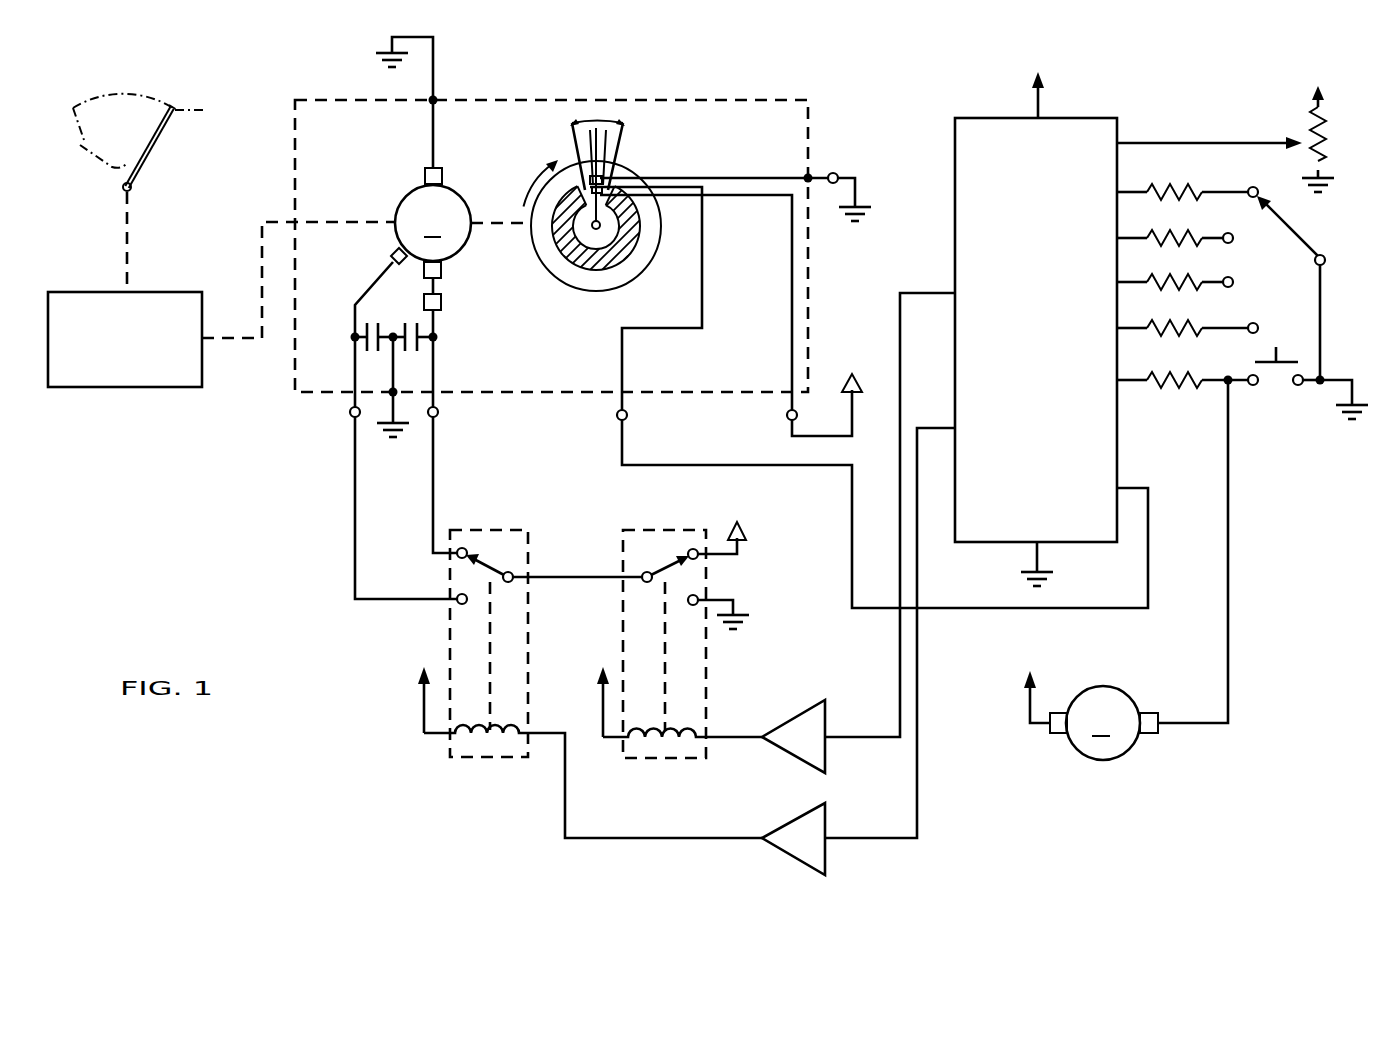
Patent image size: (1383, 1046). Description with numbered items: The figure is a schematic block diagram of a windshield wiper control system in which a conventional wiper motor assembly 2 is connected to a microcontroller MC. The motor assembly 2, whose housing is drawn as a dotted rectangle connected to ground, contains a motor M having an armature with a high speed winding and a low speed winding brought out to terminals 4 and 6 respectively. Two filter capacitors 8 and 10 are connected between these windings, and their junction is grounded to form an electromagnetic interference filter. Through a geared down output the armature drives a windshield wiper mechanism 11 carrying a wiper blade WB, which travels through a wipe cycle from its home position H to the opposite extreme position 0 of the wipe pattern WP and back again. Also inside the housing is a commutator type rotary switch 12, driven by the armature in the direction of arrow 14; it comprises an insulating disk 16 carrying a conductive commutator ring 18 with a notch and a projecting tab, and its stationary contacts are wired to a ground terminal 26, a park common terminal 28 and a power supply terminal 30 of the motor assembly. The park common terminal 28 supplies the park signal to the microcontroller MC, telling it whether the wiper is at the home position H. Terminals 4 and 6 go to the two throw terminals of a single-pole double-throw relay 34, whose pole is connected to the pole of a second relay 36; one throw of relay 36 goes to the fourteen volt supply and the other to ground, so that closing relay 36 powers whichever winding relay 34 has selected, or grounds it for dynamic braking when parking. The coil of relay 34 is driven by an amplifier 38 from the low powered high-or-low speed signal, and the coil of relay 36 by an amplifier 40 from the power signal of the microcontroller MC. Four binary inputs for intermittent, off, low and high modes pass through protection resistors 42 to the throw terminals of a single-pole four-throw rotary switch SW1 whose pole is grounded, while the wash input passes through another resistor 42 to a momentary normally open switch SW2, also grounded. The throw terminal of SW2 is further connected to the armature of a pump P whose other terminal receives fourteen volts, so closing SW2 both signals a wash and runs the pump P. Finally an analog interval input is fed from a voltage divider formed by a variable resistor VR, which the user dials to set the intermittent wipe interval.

The opposite extreme position 0 is at (82, 144).
The wipe pattern WP is at (123, 131).
The wiper blade WB is at (134, 170).
The home position H is at (198, 113).
The windshield wiper mechanism 11 is at (156, 288).
The wiper motor assembly 2 is at (730, 100).
The motor M is at (402, 190).
The capacitor 8 is at (366, 330).
The capacitor 10 is at (420, 346).
The terminal 4 is at (352, 418).
The terminal 6 is at (436, 418).
The commutator type rotary switch 12 is at (665, 148).
The arrow 14 is at (535, 180).
The insulating disk 16 is at (548, 268).
The conductive commutator ring 18 is at (627, 248).
The ground terminal 26 is at (836, 173).
The park common terminal 28 is at (616, 415).
The power supply terminal 30 is at (787, 415).
The microcontroller MC is at (1038, 241).
The protection resistor 42 is at (1172, 186).
The single-pole four-throw rotary switch SW1 is at (1314, 303).
The momentary contact normally open switch SW2 is at (1237, 535).
The variable resistor VR is at (1239, 126).
The single-pole, double-throw relay 34 is at (472, 758).
The single-pole, double-throw relay 36 is at (668, 760).
The amplifier 40 is at (826, 716).
The amplifier 38 is at (826, 824).
The pump P is at (1133, 695).